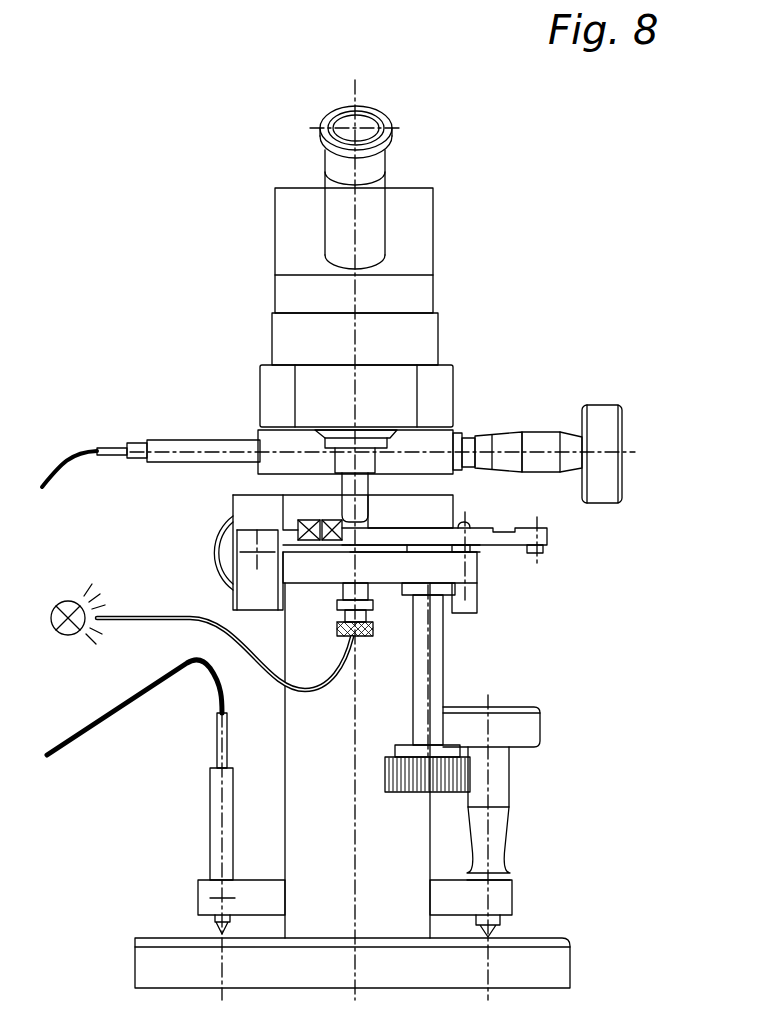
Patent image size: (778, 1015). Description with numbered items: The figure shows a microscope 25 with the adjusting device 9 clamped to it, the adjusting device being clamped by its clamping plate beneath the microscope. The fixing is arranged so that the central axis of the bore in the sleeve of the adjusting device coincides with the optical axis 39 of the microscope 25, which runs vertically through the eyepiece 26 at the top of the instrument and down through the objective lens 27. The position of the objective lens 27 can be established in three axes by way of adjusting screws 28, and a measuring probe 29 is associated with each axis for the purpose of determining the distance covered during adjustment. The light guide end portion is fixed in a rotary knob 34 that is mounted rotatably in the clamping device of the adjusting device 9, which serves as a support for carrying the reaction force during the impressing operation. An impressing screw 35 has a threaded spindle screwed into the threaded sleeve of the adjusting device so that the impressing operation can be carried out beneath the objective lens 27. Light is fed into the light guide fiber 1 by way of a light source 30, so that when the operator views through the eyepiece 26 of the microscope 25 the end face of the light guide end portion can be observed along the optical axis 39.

The light guide fiber 1 is at (278, 682).
The adjusting device 9 is at (507, 572).
The microscope 25 is at (503, 316).
The eyepiece 26 is at (328, 183).
The objective lens 27 is at (345, 483).
The adjusting screws 28 is at (598, 410).
The measuring probe 29 is at (168, 445).
The light source 30 is at (73, 636).
The rotary knob 34 is at (337, 628).
The impressing screw 35 is at (407, 783).
The optical axis 39 is at (358, 336).